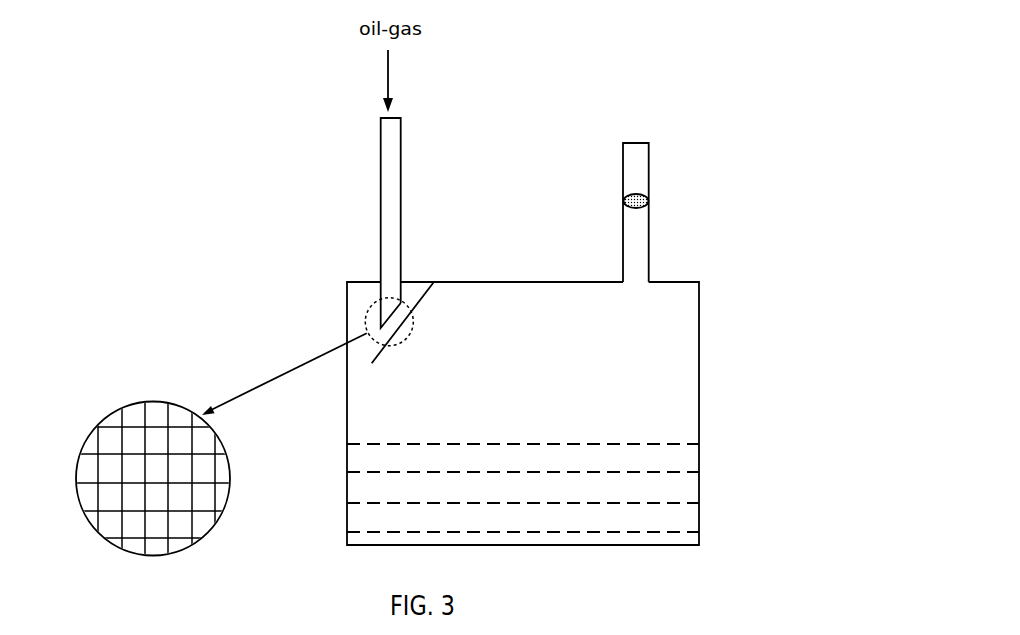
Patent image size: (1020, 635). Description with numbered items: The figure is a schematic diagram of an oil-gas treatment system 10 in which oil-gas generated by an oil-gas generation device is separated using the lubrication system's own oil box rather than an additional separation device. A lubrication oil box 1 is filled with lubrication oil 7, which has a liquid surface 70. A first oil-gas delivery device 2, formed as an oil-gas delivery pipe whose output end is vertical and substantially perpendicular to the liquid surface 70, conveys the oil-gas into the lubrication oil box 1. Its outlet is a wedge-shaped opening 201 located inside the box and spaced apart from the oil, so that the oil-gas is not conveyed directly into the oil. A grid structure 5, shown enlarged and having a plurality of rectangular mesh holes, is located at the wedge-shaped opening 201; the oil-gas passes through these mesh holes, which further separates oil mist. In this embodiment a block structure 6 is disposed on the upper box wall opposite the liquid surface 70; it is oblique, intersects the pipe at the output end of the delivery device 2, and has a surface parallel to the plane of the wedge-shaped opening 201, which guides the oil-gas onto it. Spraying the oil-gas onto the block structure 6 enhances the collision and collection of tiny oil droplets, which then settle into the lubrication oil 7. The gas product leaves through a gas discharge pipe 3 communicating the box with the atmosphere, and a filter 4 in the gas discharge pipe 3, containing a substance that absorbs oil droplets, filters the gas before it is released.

The oil-gas treatment system 10 is at (193, 122).
The lubrication oil box 1 is at (679, 388).
The first oil-gas delivery device 2 is at (392, 177).
The wedge-shaped opening 201 is at (385, 312).
The gas discharge pipe 3 is at (643, 237).
The filter 4 is at (648, 201).
The grid structure 5 is at (143, 455).
The block structure 6 is at (417, 308).
The lubrication oil 7 is at (633, 473).
The liquid surface 70 is at (647, 446).